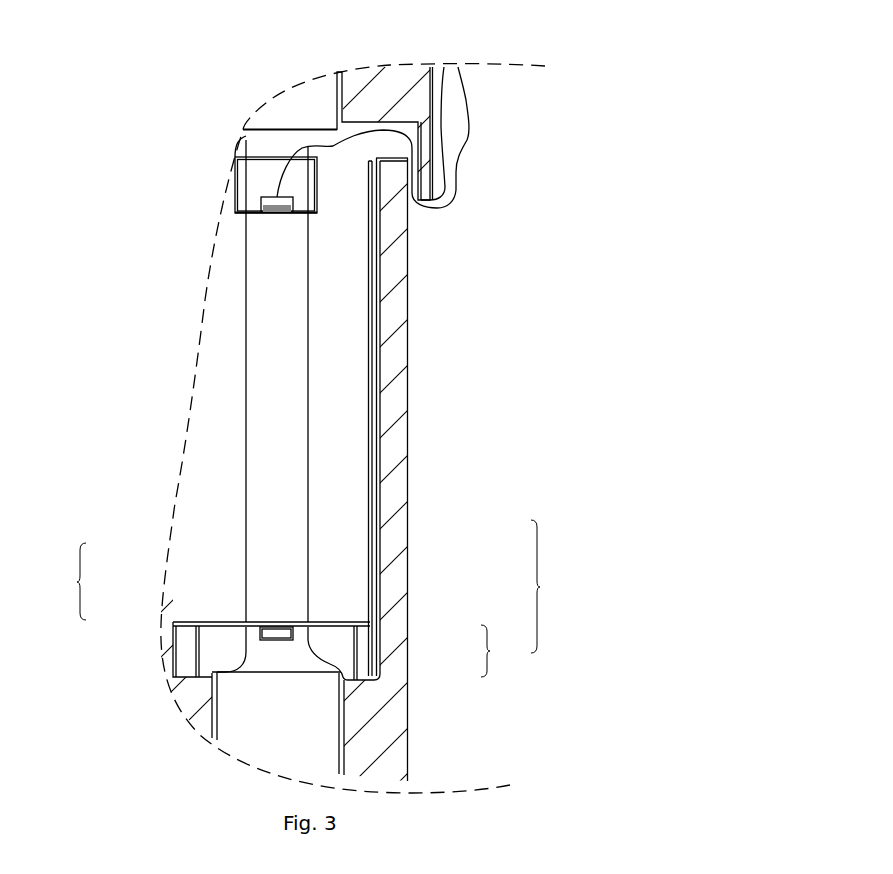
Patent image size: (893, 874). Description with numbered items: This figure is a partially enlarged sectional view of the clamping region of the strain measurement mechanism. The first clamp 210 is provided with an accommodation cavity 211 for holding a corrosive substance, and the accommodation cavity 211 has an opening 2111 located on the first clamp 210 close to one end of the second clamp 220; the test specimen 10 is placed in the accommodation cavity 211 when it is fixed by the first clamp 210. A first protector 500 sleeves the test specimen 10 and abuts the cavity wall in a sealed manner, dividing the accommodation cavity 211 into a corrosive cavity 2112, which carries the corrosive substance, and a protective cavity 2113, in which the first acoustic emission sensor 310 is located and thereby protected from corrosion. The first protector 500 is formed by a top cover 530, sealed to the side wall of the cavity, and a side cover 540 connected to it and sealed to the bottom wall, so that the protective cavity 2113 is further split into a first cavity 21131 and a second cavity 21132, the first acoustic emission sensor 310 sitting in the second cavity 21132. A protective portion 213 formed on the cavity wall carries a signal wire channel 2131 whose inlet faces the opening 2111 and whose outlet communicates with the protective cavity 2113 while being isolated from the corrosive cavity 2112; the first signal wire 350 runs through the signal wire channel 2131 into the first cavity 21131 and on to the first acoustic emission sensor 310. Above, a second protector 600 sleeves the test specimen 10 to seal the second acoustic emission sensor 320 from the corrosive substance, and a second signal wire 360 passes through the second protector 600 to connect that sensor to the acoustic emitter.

The test specimen 10 is at (272, 437).
The second protector 600 is at (235, 157).
The second acoustic emission sensor 320 is at (261, 203).
The second signal wire 360 is at (331, 146).
The second clamp 220 is at (385, 92).
The opening 2111 is at (340, 156).
The signal wire channel 2131 is at (381, 234).
The first clamp 210 is at (407, 308).
The protective portion 213 is at (372, 450).
The first signal wire 350 is at (377, 498).
The corrosive cavity 2112 is at (350, 568).
The accommodation cavity 211 is at (553, 586).
The protective cavity 2113 is at (441, 652).
The first cavity 21131 is at (364, 635).
The second cavity 21132 is at (345, 654).
The top cover 530 is at (228, 622).
The side cover 540 is at (197, 642).
The first protector 500 is at (65, 581).
The first acoustic emission sensor 310 is at (260, 632).